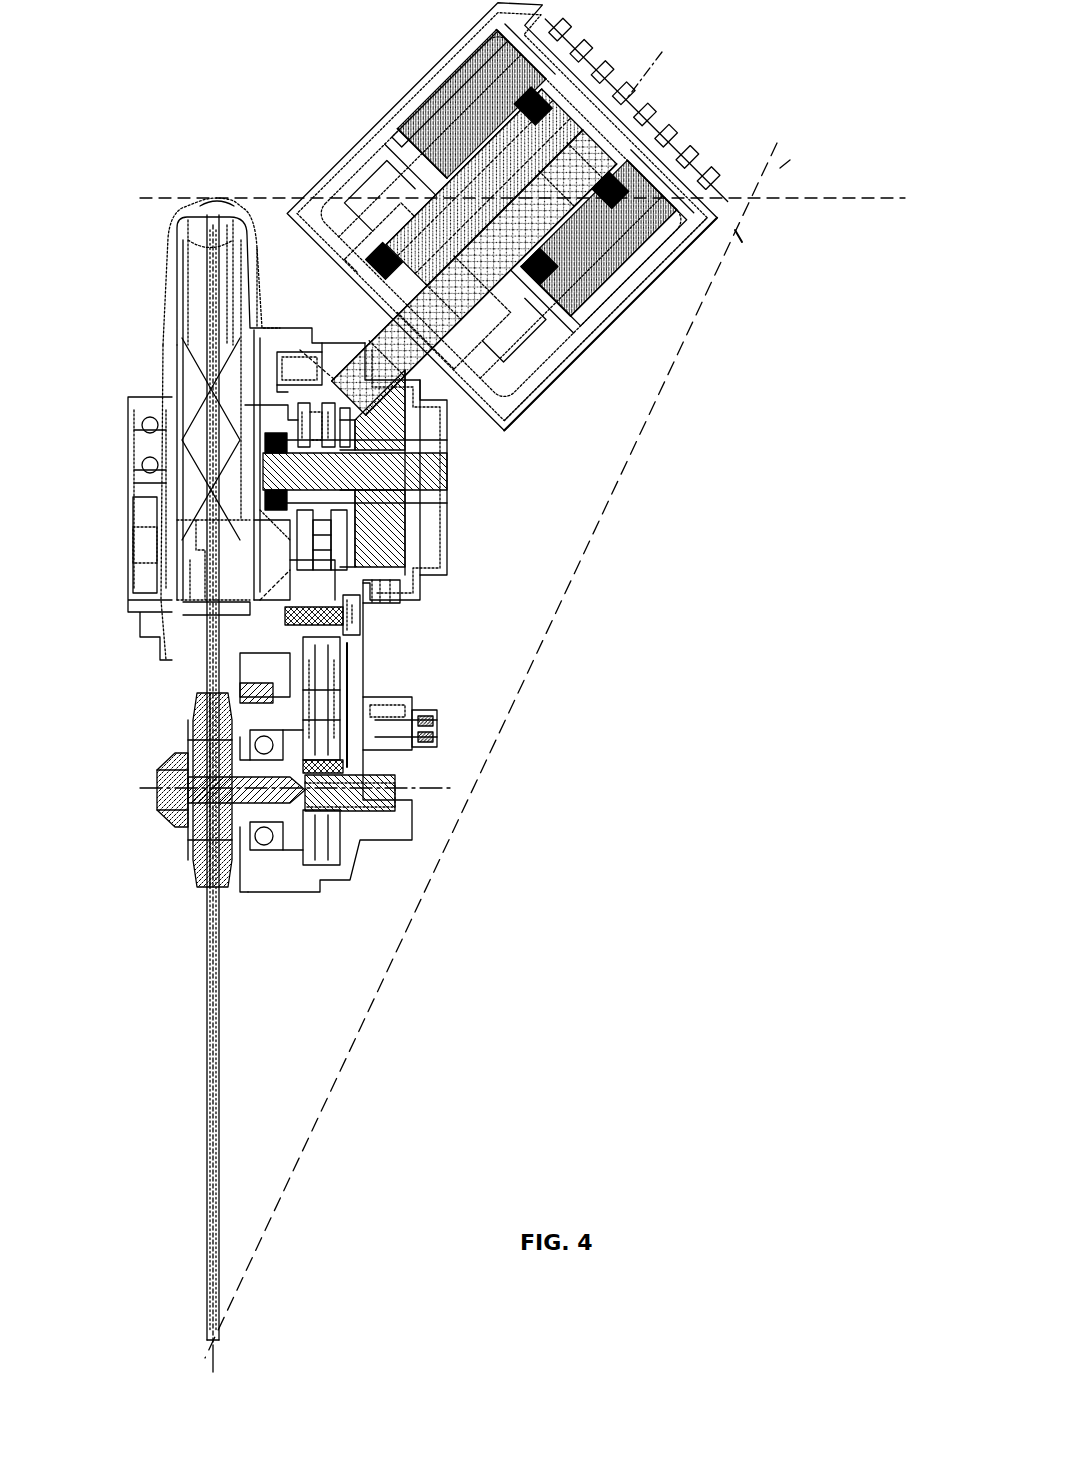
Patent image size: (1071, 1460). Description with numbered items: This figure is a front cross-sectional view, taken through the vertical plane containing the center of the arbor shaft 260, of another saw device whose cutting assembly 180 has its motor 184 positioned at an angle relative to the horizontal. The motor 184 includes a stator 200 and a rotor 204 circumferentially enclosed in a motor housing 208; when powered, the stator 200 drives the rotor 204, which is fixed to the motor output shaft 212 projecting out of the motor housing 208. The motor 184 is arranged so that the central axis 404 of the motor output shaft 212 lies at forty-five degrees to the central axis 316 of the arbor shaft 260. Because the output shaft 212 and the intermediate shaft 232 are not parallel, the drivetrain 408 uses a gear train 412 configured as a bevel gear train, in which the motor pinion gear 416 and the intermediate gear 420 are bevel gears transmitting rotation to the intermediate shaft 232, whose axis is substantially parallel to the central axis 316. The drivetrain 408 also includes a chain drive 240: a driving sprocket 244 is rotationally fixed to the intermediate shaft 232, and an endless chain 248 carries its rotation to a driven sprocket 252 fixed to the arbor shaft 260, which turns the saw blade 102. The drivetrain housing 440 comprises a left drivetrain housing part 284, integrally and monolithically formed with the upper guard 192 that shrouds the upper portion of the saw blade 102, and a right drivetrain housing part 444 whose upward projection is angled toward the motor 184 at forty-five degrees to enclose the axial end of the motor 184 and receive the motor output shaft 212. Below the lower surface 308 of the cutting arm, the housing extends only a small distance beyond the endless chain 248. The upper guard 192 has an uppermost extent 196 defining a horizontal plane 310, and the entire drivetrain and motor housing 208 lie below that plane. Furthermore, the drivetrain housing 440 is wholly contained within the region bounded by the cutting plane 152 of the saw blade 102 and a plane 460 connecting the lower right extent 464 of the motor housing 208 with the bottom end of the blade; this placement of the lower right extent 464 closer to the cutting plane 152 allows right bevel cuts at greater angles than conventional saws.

The saw blade 102 is at (208, 300).
The cutting plane 152 is at (214, 1372).
The cutting assembly 180 is at (790, 160).
The motor 184 is at (513, 215).
The upper guard 192 is at (172, 232).
The uppermost extent 196 is at (215, 196).
The stator 200 is at (538, 178).
The rotor 204 is at (500, 221).
The motor housing 208 is at (608, 322).
The motor output shaft 212 is at (454, 252).
The intermediate shaft 232 is at (392, 478).
The chain drive 240 is at (360, 847).
The driving sprocket 244 is at (298, 420).
The endless chain 248 is at (330, 697).
The driven sprocket 252 is at (300, 812).
The arbor shaft 260 is at (400, 715).
The left drivetrain housing part 284 is at (265, 875).
The lower surface 308 is at (390, 604).
The horizontal plane 310 is at (268, 195).
The central axis 316 is at (420, 787).
The central axis 404 is at (660, 78).
The drivetrain 408 is at (404, 576).
The gear train 412 is at (330, 358).
The motor pinion gear 416 is at (400, 383).
The intermediate gear 420 is at (385, 528).
The drivetrain housing 440 is at (312, 912).
The right drivetrain housing part 444 is at (345, 877).
The plane 460 is at (705, 292).
The lower right extent 464 is at (742, 240).